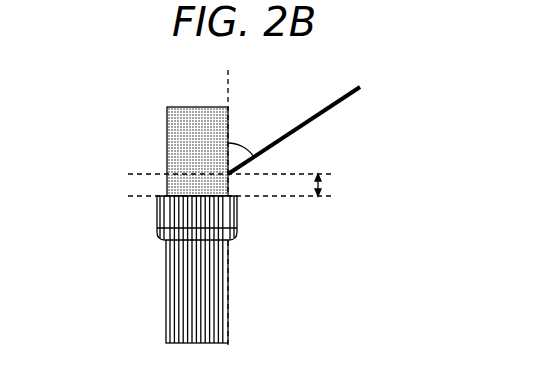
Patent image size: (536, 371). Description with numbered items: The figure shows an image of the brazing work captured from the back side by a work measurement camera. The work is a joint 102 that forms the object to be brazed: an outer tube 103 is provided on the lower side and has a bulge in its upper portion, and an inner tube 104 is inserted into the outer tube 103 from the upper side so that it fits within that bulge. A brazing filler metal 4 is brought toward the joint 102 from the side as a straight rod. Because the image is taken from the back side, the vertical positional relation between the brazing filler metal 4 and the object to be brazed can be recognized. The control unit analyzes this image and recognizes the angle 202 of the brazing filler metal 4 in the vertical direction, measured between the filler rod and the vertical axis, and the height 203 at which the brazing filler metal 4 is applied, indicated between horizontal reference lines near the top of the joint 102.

The brazing filler metal 4 is at (338, 105).
The joint 102 is at (162, 223).
The outer tube 103 is at (173, 315).
The inner tube 104 is at (173, 140).
The angle 202 is at (250, 150).
The height 203 is at (321, 181).